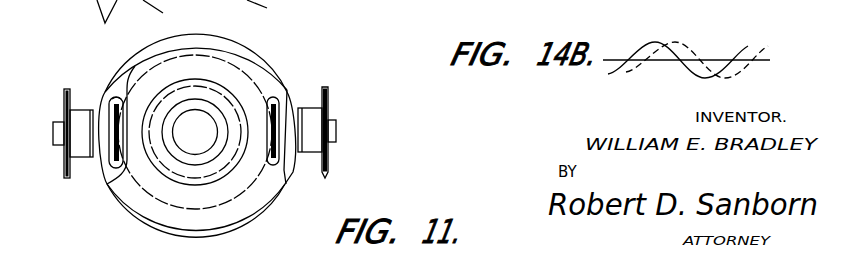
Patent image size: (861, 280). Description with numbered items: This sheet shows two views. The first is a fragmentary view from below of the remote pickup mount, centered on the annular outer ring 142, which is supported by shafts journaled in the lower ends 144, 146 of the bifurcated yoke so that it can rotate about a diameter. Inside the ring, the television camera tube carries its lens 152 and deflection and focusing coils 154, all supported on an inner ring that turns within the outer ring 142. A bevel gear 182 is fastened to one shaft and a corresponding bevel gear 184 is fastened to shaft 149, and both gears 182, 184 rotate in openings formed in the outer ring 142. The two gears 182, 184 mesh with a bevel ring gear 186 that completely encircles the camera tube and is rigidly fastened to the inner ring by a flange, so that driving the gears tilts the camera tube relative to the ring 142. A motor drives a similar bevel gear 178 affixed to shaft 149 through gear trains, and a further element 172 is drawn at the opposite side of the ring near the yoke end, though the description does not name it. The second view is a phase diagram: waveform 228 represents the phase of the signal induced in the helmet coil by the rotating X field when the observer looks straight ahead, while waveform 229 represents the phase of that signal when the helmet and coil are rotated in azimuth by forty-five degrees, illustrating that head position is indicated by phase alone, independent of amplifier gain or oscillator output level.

In FIG. 11, the annular ring 142 is at (141, 216).
In FIG. 11, the lower end of bifurcated yoke 144 is at (311, 152).
In FIG. 11, the lower end of bifurcated yoke 146 is at (81, 158).
In FIG. 11, the shaft 149 is at (54, 133).
In FIG. 11, the lens 152 is at (213, 152).
In FIG. 11, the deflection and focusing coils 154 is at (190, 80).
In FIG. 11, the plate 172 is at (326, 89).
In FIG. 11, the bevel gear 178 is at (66, 91).
In FIG. 11, the bevel gear 182 is at (275, 99).
In FIG. 11, the bevel gear 184 is at (113, 99).
In FIG. 11, the bevel ring gear 186 is at (213, 57).
In FIG. 14B, the waveform 228 is at (640, 43).
In FIG. 14B, the waveform 229 is at (692, 54).